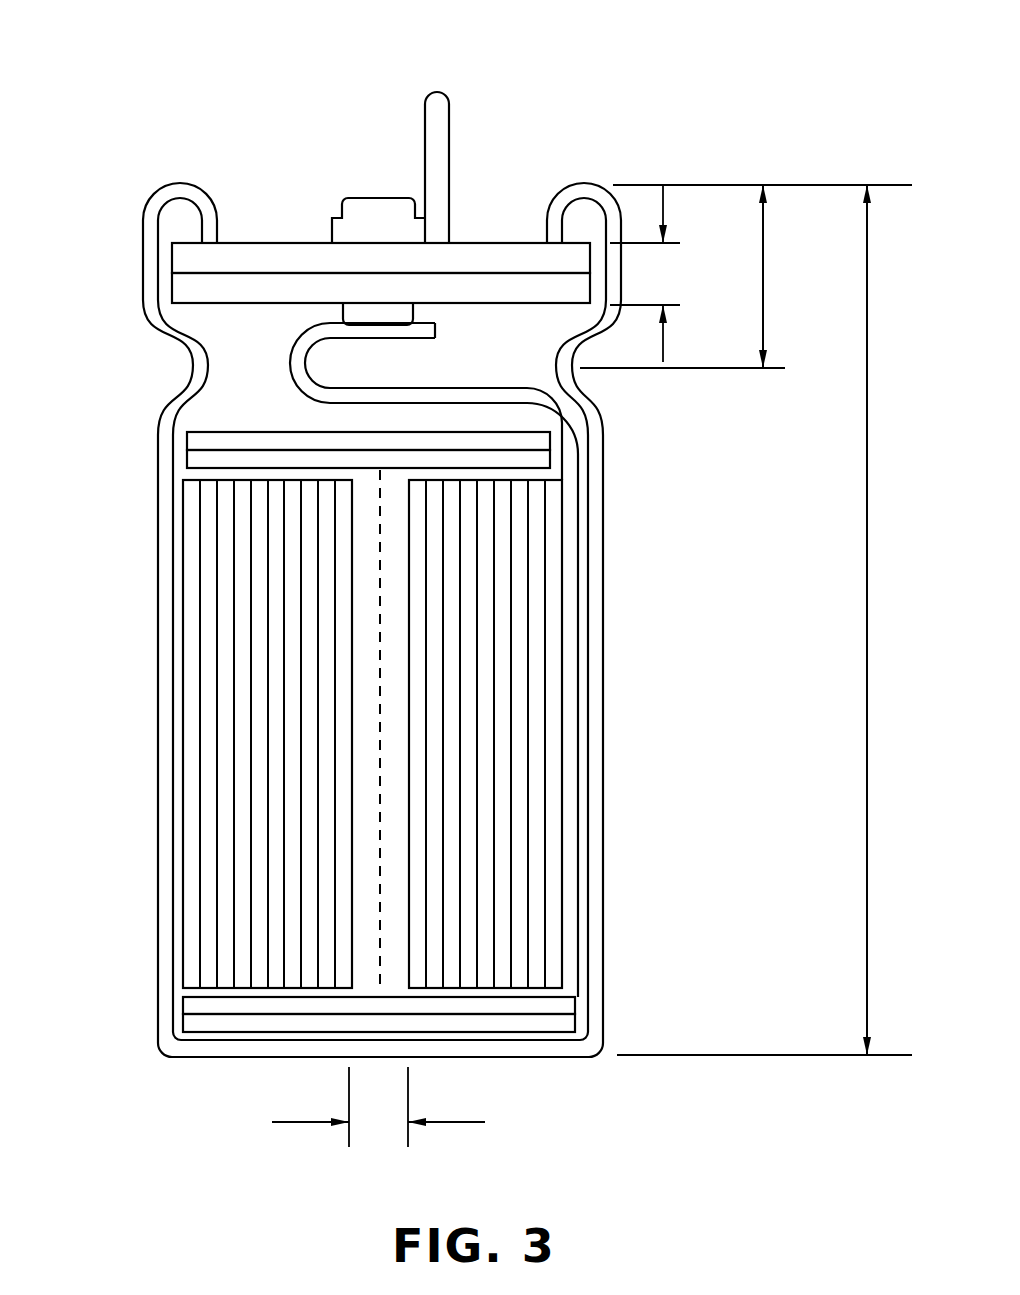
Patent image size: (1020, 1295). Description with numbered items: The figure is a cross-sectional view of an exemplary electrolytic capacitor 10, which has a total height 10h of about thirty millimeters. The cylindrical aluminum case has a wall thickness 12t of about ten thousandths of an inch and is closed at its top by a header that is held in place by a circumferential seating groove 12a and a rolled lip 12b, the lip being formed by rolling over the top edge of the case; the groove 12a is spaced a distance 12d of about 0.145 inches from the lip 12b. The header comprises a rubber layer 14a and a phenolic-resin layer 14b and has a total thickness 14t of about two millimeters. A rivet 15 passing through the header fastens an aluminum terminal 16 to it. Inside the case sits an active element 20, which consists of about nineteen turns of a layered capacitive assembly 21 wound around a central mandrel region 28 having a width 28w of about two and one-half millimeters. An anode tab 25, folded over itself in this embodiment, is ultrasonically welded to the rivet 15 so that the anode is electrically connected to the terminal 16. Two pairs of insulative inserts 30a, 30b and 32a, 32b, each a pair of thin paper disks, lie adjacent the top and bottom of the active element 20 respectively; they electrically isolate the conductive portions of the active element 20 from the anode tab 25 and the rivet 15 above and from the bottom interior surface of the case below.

The electrolytic capacitor 10 is at (668, 88).
The total height 10h is at (866, 616).
The circumferential seating groove 12a is at (193, 371).
The rolled lip 12b is at (172, 193).
The thickness 12t is at (255, 842).
The distance 12d is at (765, 273).
The rubber layer 14a is at (185, 256).
The phenolic-resin layer 14b is at (185, 290).
The total thickness 14t is at (665, 200).
The rivet 15 is at (378, 201).
The aluminum terminal 16 is at (440, 98).
The active element 20 is at (258, 668).
The layered capacitive assembly 21 is at (195, 540).
The anode tab 25 is at (425, 391).
The mandrel region 28 is at (395, 738).
The width or diameter 28w is at (297, 1123).
The insulative insert 30a is at (547, 442).
The insulative insert 30b is at (547, 458).
The insulative insert 32a is at (188, 1005).
The insulative insert 32b is at (188, 1021).